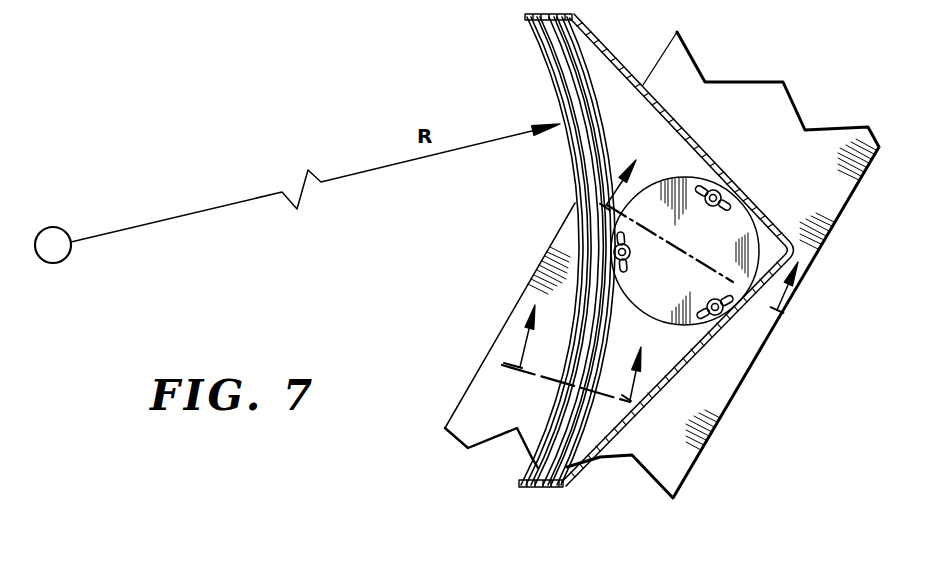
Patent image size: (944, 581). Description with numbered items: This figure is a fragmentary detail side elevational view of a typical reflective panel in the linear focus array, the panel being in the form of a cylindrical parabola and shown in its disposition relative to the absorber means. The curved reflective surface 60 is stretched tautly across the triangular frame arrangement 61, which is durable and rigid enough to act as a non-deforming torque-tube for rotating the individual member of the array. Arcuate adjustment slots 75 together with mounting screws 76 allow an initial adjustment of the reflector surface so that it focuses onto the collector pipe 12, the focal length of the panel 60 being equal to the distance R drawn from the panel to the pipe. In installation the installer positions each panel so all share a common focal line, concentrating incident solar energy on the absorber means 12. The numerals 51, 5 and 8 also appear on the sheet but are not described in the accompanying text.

The collector pipe 12 is at (72, 228).
The reference numeral (adjacent figure) 51 is at (77, 7).
The reflector panel surface 60 is at (552, 410).
The triangular frame arrangement 61 is at (632, 422).
The arcuate adjustment slot 75 is at (703, 186).
The mounting screw 76 is at (726, 194).
The section line arrows 5 is at (719, 214).
The section line arrows 8 is at (581, 355).